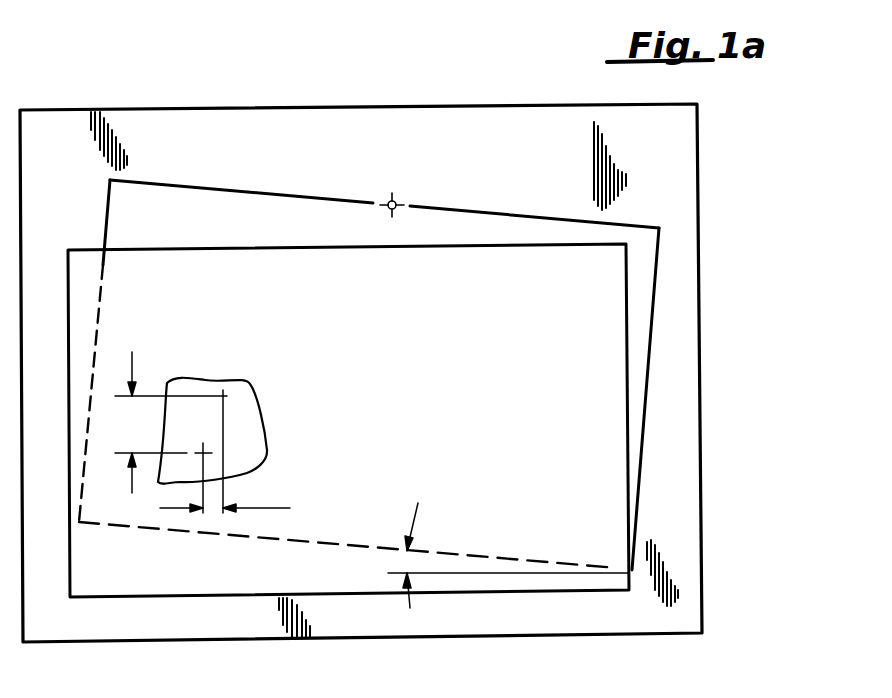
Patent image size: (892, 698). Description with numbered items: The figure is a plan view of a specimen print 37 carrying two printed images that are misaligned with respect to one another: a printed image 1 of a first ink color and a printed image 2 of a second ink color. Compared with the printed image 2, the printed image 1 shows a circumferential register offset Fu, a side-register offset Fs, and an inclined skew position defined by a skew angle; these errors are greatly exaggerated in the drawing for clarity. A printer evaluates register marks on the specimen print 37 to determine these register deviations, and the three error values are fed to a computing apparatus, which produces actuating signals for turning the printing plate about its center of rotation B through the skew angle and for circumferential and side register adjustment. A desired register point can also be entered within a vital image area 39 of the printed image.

The printed image 1 is at (210, 207).
The printed image 2 is at (200, 583).
The specimen print 37 is at (690, 140).
The vital image area 39 is at (160, 478).
The center of rotation B is at (398, 197).
The circumferential register offset Fu is at (169, 422).
The side-register offset Fs is at (212, 511).